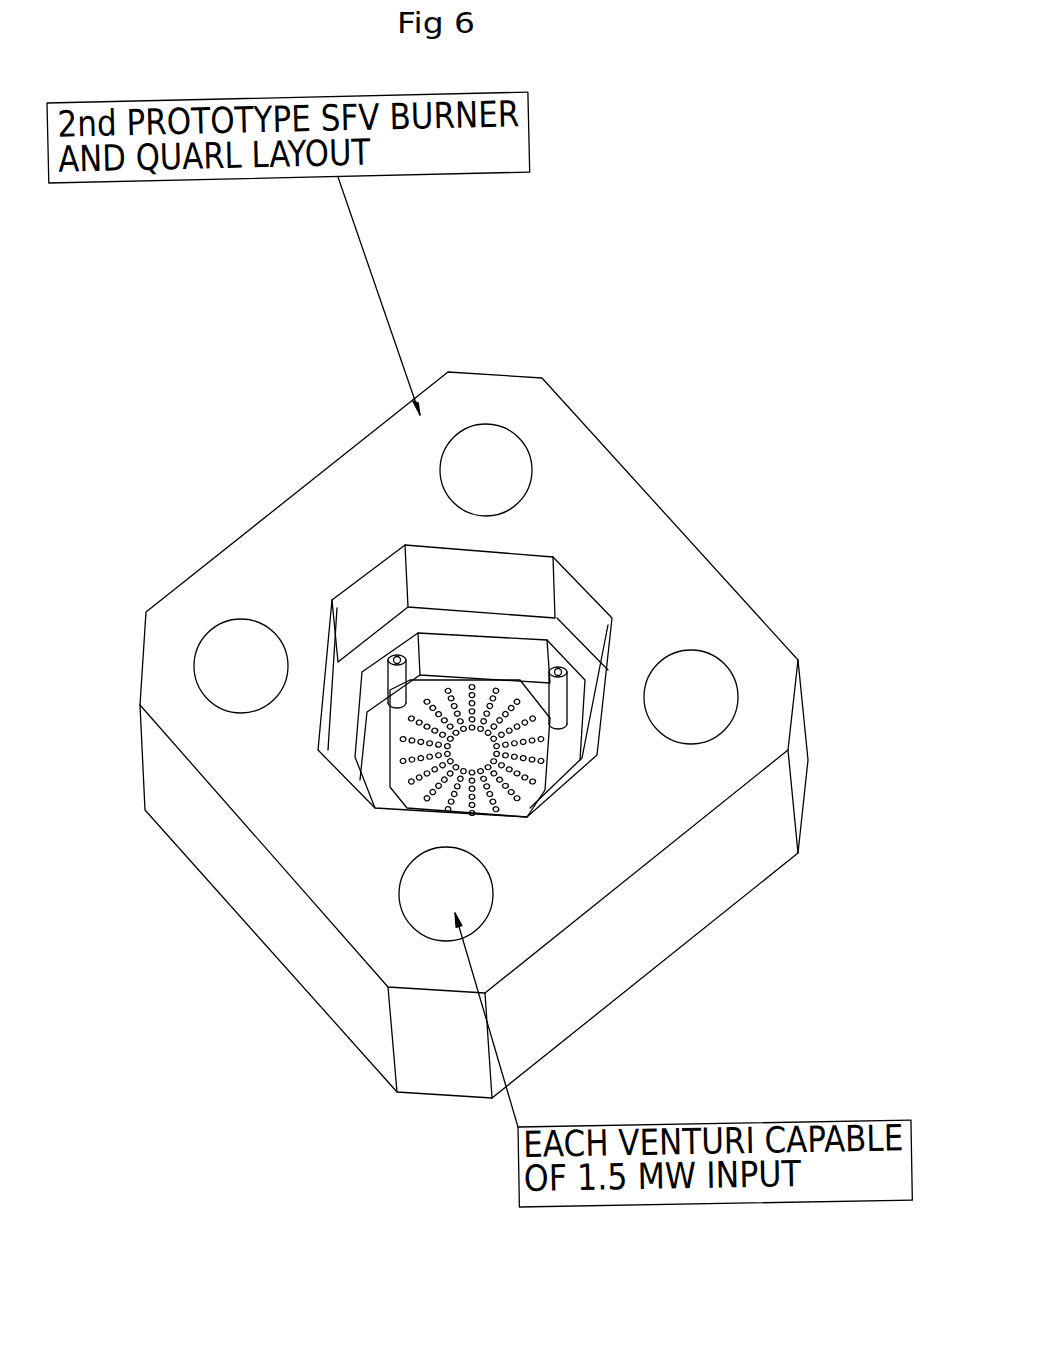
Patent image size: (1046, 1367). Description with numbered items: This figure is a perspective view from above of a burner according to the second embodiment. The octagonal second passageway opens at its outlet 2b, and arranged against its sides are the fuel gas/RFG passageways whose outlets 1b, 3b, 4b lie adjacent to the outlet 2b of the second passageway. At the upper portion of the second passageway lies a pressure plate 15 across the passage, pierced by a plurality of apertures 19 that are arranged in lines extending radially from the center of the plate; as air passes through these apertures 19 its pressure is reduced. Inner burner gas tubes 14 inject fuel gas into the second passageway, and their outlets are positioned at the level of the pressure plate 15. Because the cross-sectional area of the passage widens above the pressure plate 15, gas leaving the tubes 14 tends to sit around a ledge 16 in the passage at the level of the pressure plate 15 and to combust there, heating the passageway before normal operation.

The outlet of the first fuel gas/RFG passageway 1b is at (435, 918).
The outlet of the second passageway 2b is at (387, 582).
The outlet of the third fuel gas/RFG passageway 3b is at (700, 712).
The outlet of the fourth fuel gas/RFG passageway 4b is at (487, 453).
The inner burner gas tubes 14 is at (392, 657).
The pressure plate 15 is at (522, 688).
The ledge 16 is at (537, 628).
The apertures 19 is at (541, 741).